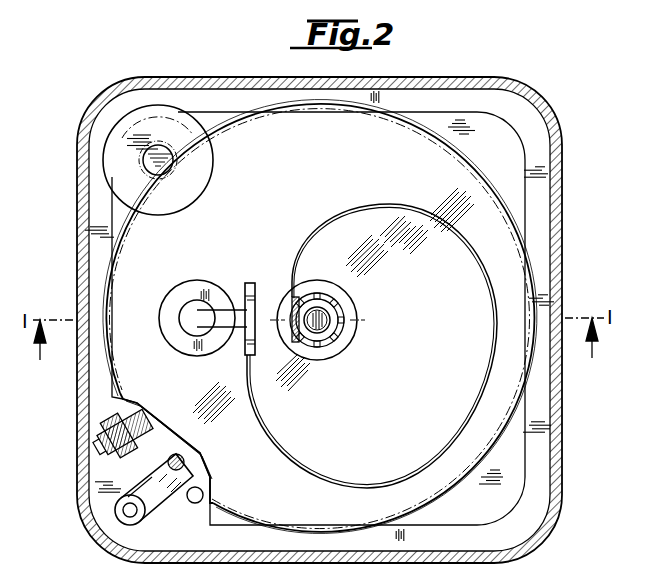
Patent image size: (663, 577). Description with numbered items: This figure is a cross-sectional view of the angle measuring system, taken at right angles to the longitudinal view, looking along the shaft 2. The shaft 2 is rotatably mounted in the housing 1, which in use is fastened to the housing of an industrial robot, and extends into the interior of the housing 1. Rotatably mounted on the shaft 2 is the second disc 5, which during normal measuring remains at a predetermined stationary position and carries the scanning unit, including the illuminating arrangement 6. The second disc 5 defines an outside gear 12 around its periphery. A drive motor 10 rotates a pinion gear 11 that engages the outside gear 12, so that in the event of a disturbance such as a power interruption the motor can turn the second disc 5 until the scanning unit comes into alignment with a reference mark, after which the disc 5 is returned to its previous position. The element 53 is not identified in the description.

The housing 1 is at (565, 180).
The shaft 2 is at (332, 322).
The second disc 5 is at (290, 193).
The illuminating arrangement 6 is at (213, 276).
The drive motor 10 is at (140, 117).
The pinion gear 11 is at (173, 147).
The outside gear 12 is at (245, 118).
The tensioning mechanism 53 is at (163, 500).